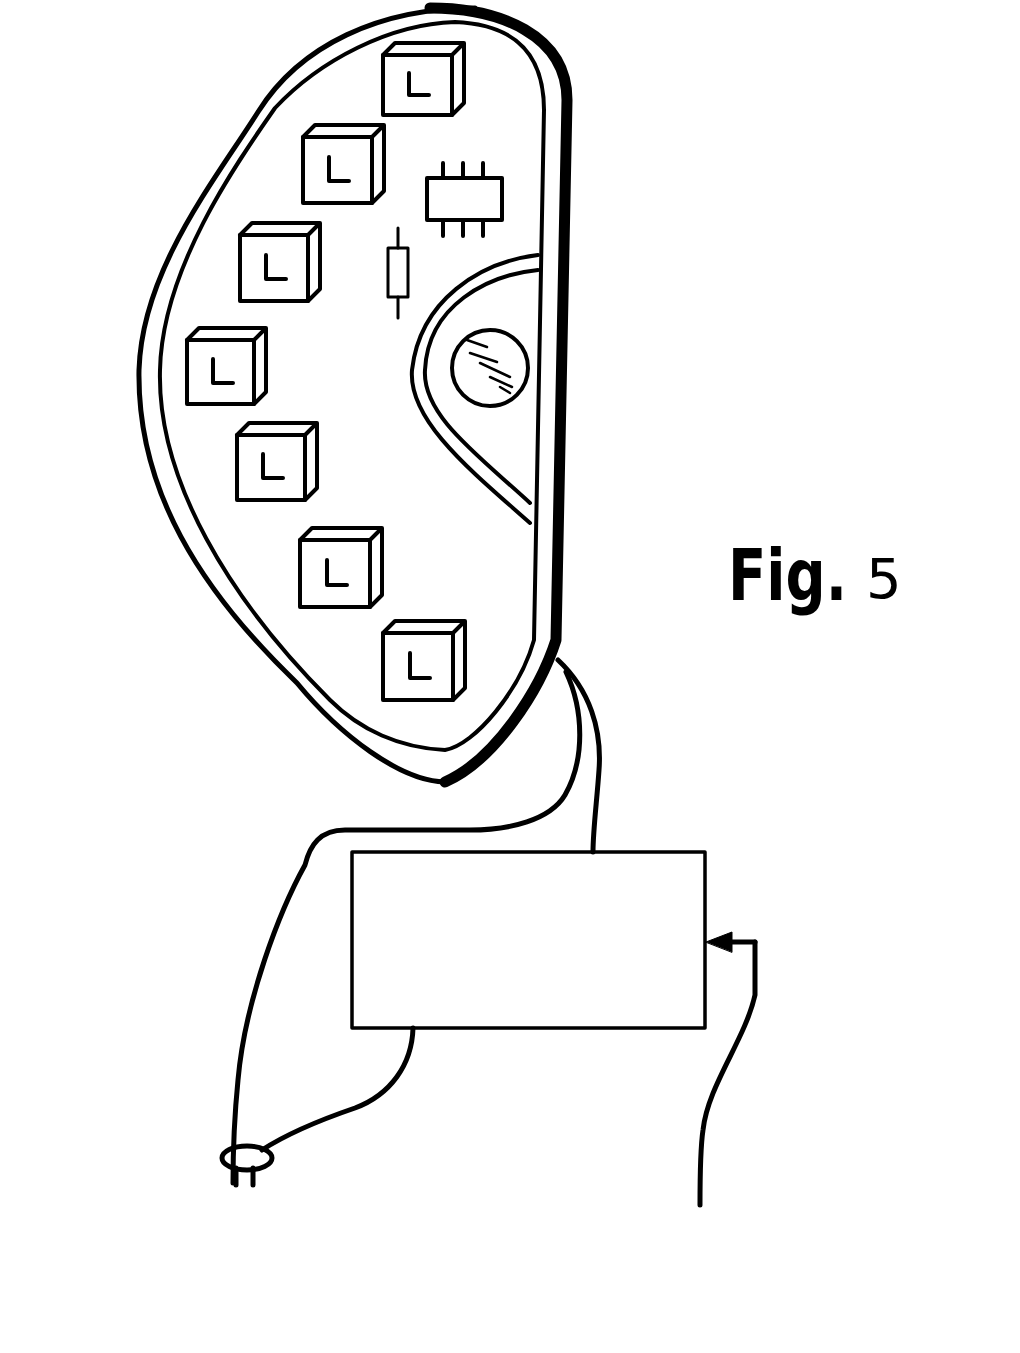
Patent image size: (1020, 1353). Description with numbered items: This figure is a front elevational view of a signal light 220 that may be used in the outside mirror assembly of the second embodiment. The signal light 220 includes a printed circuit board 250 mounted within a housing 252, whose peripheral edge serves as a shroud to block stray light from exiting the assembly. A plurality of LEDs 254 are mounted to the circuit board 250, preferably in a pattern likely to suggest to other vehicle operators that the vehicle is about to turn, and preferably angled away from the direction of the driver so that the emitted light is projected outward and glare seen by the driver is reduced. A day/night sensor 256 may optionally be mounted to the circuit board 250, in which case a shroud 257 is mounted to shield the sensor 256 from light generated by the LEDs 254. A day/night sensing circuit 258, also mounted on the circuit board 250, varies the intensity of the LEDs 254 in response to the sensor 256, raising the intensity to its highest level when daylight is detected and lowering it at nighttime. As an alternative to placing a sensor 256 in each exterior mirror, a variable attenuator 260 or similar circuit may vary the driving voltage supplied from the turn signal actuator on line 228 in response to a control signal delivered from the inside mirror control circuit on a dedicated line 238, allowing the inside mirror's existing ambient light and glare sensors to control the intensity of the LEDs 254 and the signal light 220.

The signal light 220 is at (137, 122).
The printed circuit board 250 is at (507, 557).
The housing 252 is at (288, 695).
The LEDs 254 is at (195, 393).
The day/night sensor 256 is at (505, 372).
The shroud 257 is at (497, 292).
The day/night sensing circuit 258 is at (505, 163).
The variable attenuator 260 is at (673, 852).
The line 228 is at (268, 1163).
The dedicated line 238 is at (705, 1165).